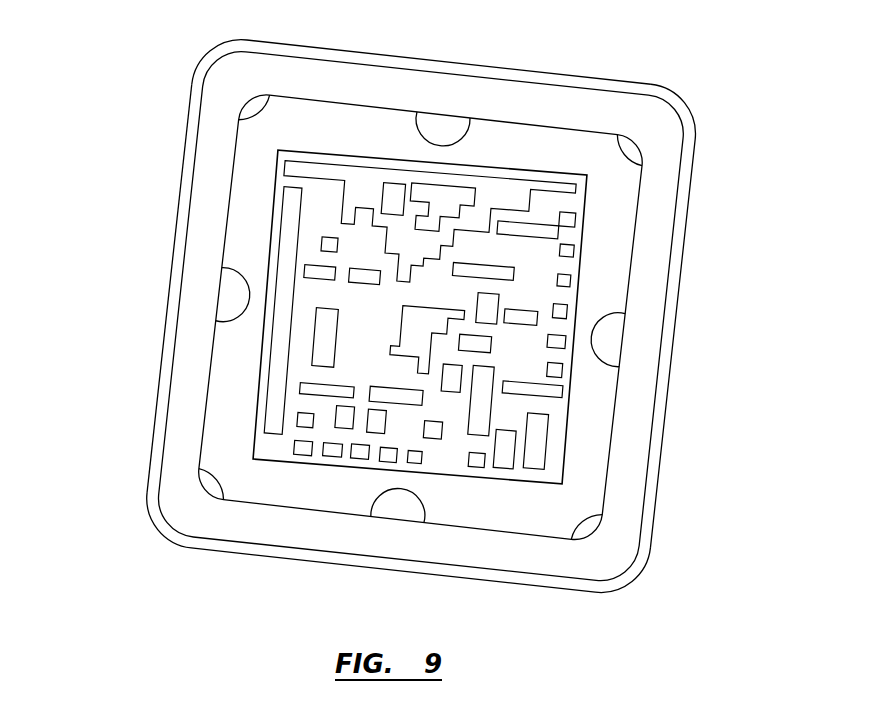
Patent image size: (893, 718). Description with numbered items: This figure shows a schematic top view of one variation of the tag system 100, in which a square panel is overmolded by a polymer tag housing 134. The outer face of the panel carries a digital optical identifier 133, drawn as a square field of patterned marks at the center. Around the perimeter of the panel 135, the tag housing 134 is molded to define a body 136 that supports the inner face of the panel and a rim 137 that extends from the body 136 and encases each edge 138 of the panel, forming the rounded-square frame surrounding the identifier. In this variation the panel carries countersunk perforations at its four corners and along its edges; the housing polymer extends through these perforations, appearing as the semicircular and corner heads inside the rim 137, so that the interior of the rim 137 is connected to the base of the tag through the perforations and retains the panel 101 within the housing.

The tag system 100 is at (740, 44).
The outer housing 101 is at (211, 61).
The digital optical identifier 133 is at (361, 176).
The tag housing 134 is at (668, 271).
The perimeter of the panel 135 is at (637, 414).
The body 136 is at (155, 542).
The rim 137 is at (190, 231).
The edge 138 is at (690, 186).